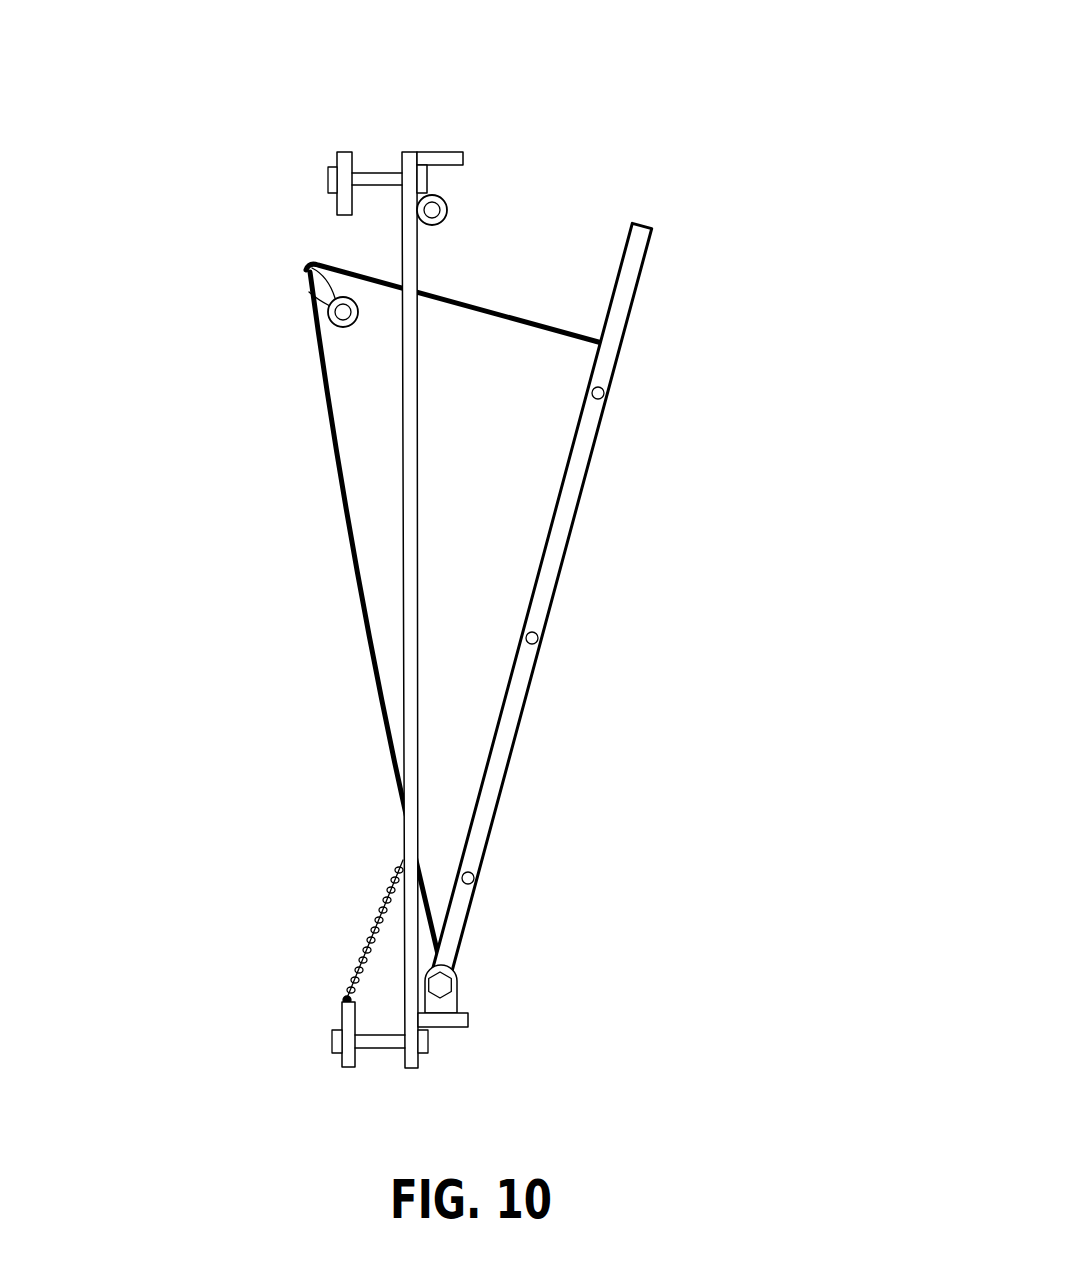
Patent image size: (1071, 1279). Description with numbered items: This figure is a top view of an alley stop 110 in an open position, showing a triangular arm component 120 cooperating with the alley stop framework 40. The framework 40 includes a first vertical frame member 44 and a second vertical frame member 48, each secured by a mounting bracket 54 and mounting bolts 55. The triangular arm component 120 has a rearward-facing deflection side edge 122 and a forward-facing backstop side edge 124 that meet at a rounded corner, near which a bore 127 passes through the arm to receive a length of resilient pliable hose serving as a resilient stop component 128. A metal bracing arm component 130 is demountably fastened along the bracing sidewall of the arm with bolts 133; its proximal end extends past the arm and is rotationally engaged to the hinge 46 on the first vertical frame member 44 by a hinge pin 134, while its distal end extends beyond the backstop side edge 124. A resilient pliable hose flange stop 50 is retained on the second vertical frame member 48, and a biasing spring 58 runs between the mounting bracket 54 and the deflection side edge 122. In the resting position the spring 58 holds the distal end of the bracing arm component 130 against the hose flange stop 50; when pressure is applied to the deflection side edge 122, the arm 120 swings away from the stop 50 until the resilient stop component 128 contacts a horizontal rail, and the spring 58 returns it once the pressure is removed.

The alley stop 110 is at (598, 160).
The alley stop framework 40 is at (380, 233).
The first vertical frame member 44 is at (457, 1030).
The hinge 46 is at (458, 997).
The vertical frame member 48 is at (425, 150).
The resilient pliable hose flange stop 50 is at (448, 210).
The mounting bracket 54 is at (337, 160).
The mounting bolts 55 is at (368, 172).
The biasing spring 58 is at (380, 910).
The triangular arm component 120 is at (362, 411).
The deflection side edge 122 is at (367, 615).
The backstop side edge 124 is at (440, 293).
The bore 127 is at (313, 268).
The resilient stop component 128 is at (305, 300).
The bracing arm component 130 is at (640, 285).
The bolts 133 is at (604, 388).
The hinge pin 134 is at (458, 928).